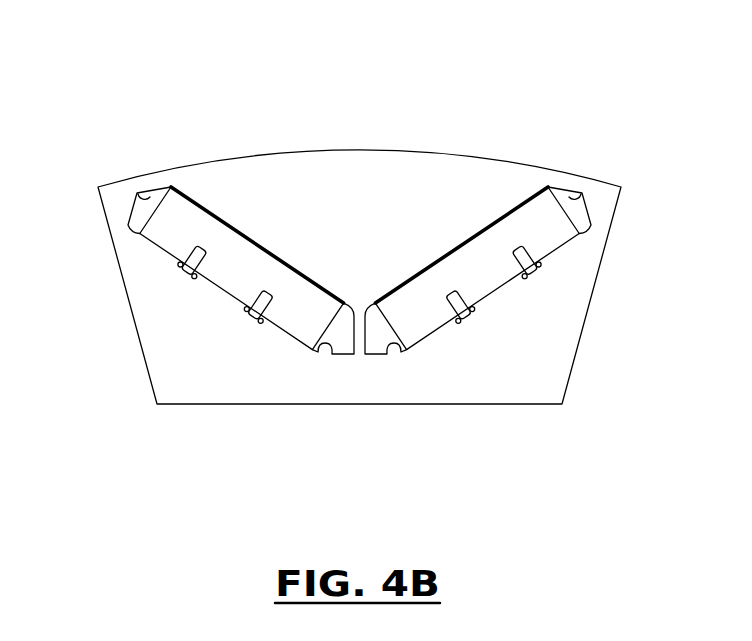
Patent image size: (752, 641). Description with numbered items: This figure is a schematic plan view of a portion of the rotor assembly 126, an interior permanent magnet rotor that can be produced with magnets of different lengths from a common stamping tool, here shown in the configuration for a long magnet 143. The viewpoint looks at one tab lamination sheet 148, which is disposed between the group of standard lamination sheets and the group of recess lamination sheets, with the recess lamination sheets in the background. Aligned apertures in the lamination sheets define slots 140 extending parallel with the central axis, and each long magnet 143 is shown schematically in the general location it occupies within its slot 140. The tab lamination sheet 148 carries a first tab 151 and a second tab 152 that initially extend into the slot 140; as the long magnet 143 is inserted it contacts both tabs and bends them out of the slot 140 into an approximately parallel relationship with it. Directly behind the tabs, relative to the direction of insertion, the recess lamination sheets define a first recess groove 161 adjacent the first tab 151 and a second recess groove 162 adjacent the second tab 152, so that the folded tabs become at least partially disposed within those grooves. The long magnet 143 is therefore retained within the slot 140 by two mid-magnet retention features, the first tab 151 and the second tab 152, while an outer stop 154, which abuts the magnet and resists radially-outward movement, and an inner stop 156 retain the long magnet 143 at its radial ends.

The rotor assembly 126 is at (614, 94).
The slot 140 is at (134, 208).
The long magnet 143 is at (207, 210).
The tab lamination sheet 148 is at (400, 150).
The first tab 151 is at (204, 250).
The second tab 152 is at (270, 294).
The outer stop 154 is at (588, 208).
The inner stop 156 is at (318, 355).
The first recess groove 161 is at (181, 267).
The second recess groove 162 is at (249, 312).